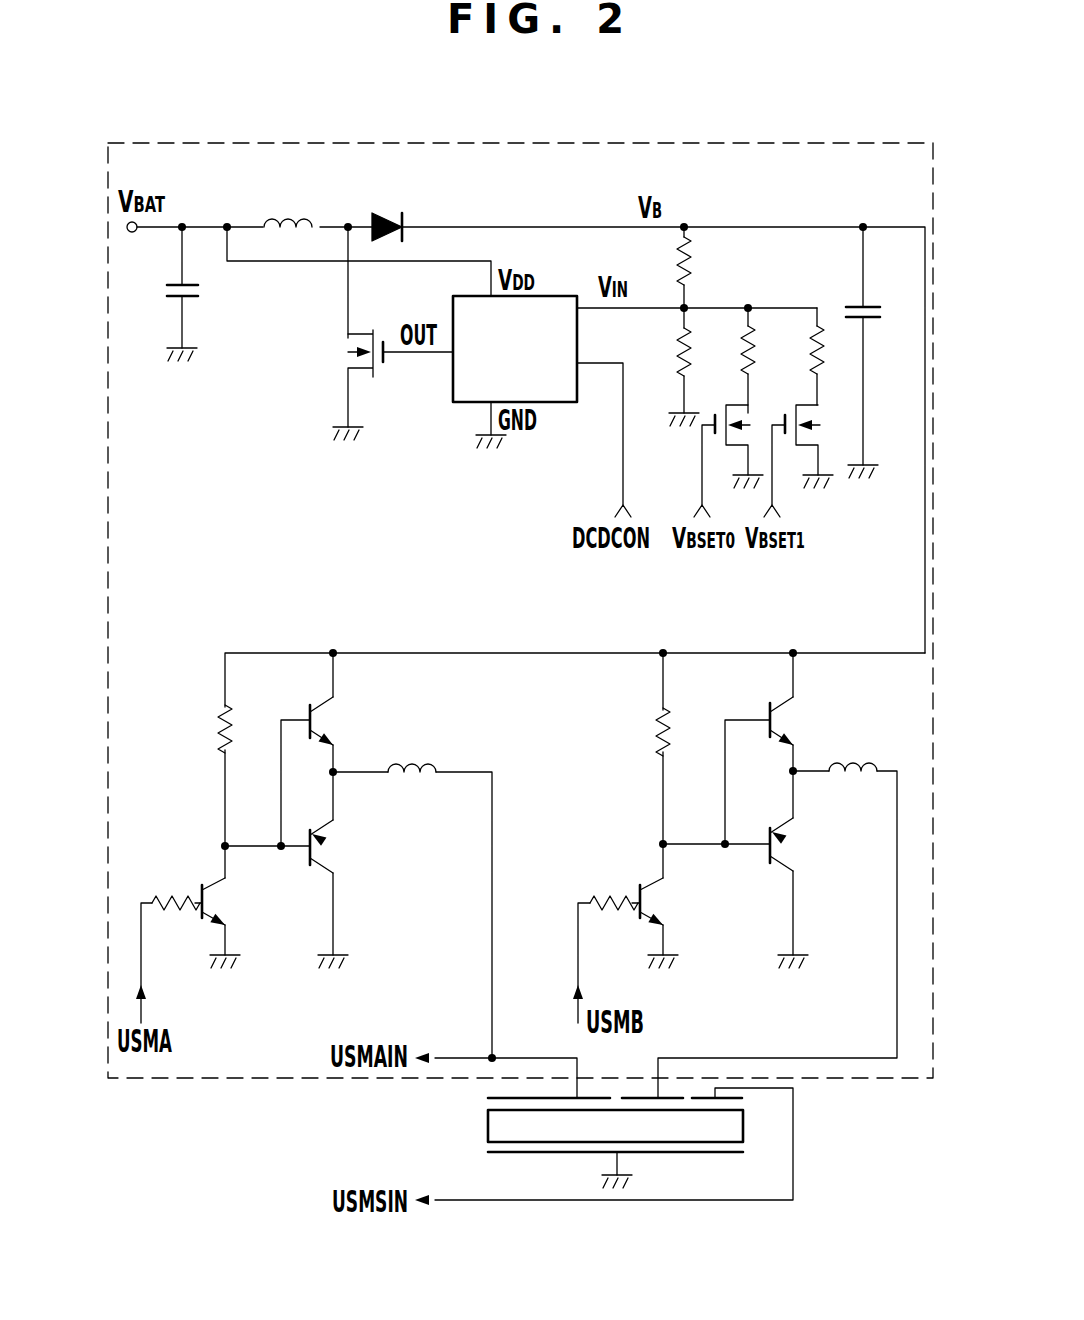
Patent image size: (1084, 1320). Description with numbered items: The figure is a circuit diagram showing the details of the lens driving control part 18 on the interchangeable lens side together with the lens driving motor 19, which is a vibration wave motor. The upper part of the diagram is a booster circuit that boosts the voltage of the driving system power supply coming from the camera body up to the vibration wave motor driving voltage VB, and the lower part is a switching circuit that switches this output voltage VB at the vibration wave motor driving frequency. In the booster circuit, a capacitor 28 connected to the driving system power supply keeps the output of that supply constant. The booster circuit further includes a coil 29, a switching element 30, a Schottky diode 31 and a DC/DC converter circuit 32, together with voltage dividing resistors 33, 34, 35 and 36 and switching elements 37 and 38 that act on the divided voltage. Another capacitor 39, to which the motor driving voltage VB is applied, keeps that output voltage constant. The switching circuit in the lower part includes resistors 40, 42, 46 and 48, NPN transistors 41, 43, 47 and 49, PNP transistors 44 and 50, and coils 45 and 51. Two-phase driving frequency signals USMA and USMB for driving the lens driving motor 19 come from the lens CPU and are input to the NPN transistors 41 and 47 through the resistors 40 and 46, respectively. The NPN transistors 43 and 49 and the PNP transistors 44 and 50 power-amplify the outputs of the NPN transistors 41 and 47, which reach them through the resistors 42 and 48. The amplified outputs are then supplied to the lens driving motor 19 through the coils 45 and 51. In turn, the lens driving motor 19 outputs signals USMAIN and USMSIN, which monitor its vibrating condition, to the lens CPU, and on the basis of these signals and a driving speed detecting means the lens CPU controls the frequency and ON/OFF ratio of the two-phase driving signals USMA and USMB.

The lens driving control part 18 is at (545, 143).
The lens driving motor 19 is at (742, 1127).
The capacitor 28 is at (162, 289).
The coil 29 is at (292, 216).
The switching element 30 is at (375, 335).
The Schottky diode 31 is at (386, 213).
The DC/DC converter circuit 32 is at (553, 296).
The voltage dividing resistor 33 is at (690, 257).
The voltage dividing resistor 34 is at (678, 345).
The voltage dividing resistor 35 is at (752, 353).
The voltage dividing resistor 36 is at (820, 340).
The switching element 37 is at (752, 420).
The switching element 38 is at (819, 420).
The capacitor 39 is at (883, 312).
The resistor 40 is at (170, 898).
The NPN transistor 41 is at (204, 880).
The resistor 42 is at (210, 726).
The NPN transistor 43 is at (322, 720).
The PNP transistor 44 is at (338, 843).
The coil 45 is at (412, 760).
The resistor 46 is at (612, 897).
The NPN transistor 47 is at (663, 900).
The resistor 48 is at (673, 741).
The NPN transistor 49 is at (786, 720).
The PNP transistor 50 is at (790, 838).
The coil 51 is at (858, 764).